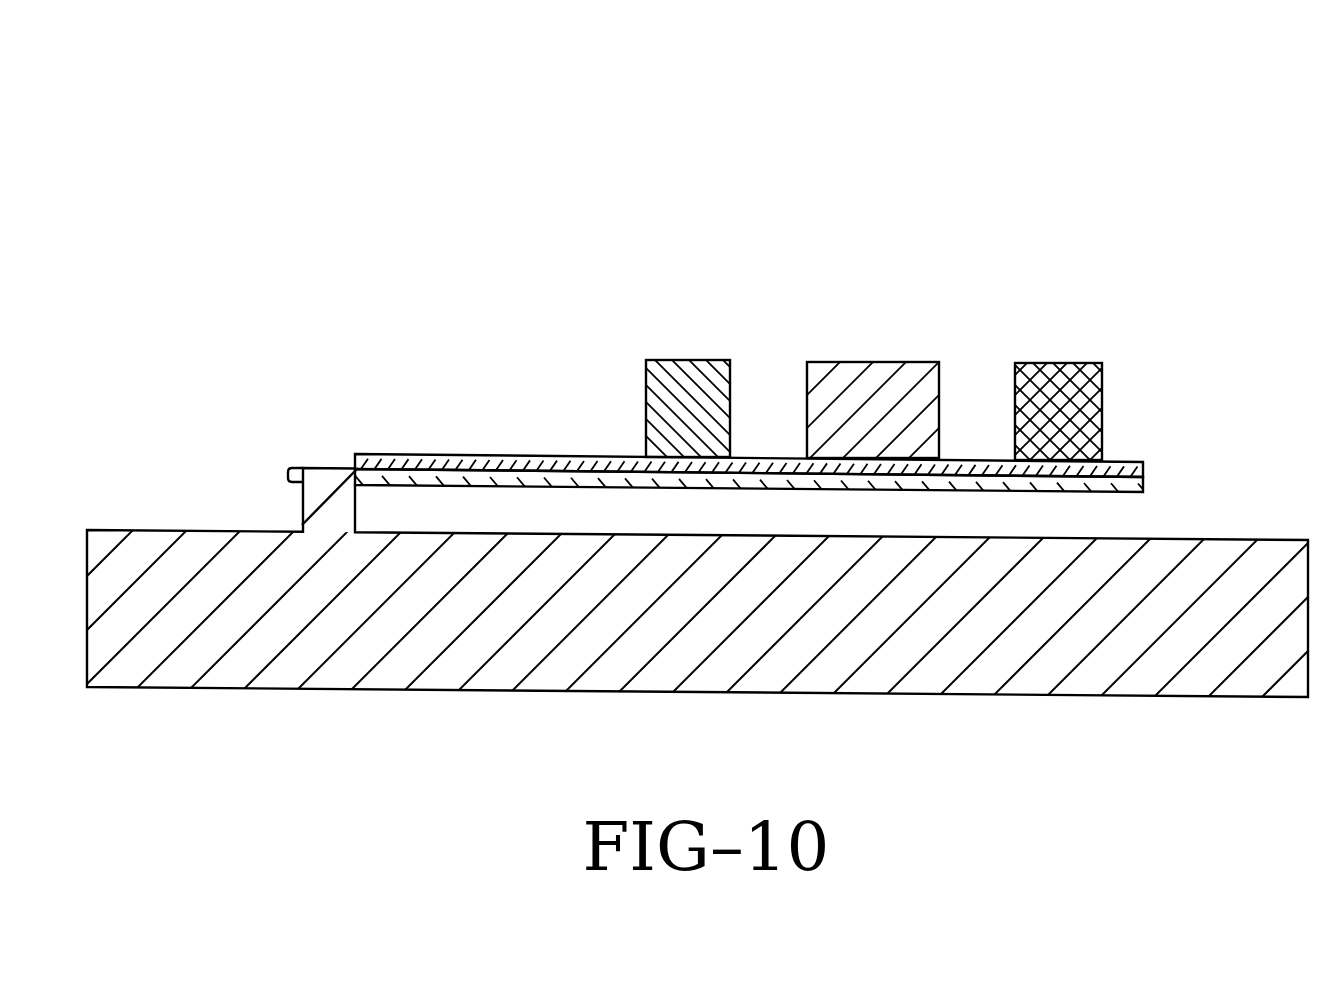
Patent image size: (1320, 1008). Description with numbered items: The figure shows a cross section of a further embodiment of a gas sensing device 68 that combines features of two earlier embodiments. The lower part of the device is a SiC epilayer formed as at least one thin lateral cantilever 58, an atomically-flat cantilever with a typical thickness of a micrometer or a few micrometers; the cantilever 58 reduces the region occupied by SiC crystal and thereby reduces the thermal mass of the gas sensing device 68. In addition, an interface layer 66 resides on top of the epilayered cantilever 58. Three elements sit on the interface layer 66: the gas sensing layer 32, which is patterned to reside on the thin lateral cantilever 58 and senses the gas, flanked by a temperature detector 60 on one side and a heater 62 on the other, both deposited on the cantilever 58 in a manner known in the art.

The gas sensing device 68 is at (976, 172).
The thin lateral cantilever 58 is at (1108, 490).
The interface layer 66 is at (570, 455).
The temperature detector structure 60 is at (687, 387).
The gas sensing layer 32 is at (887, 385).
The heater structure 62 is at (1083, 383).